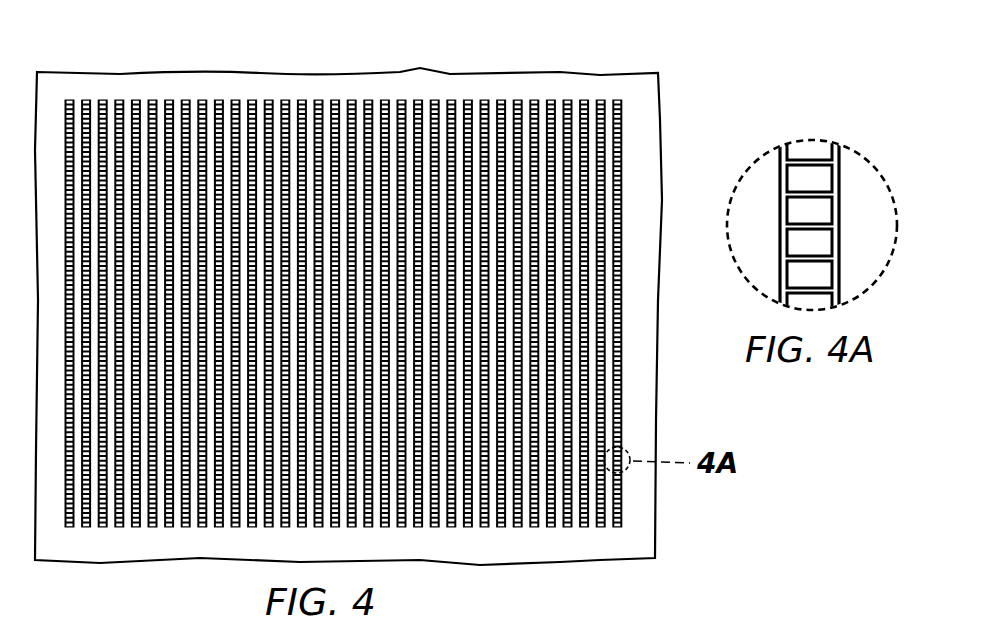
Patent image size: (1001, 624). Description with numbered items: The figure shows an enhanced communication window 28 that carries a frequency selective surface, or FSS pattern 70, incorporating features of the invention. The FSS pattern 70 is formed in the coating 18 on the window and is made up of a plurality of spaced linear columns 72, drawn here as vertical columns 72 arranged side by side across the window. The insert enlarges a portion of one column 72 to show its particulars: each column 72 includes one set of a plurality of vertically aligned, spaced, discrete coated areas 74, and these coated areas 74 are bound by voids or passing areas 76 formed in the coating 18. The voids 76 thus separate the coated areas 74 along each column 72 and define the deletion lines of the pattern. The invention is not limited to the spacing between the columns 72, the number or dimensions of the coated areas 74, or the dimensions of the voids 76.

In FIG. 4, the coating 18 is at (72, 90).
In FIG. 4, the enhanced communication window 28 is at (117, 84).
In FIG. 4, the FSS pattern 70 is at (516, 92).
In FIG. 4, the column 72 is at (210, 99).
In FIG. 4A, the column 72 is at (850, 207).
In FIG. 4A, the coated area 74 is at (795, 243).
In FIG. 4A, the void 76 is at (840, 257).